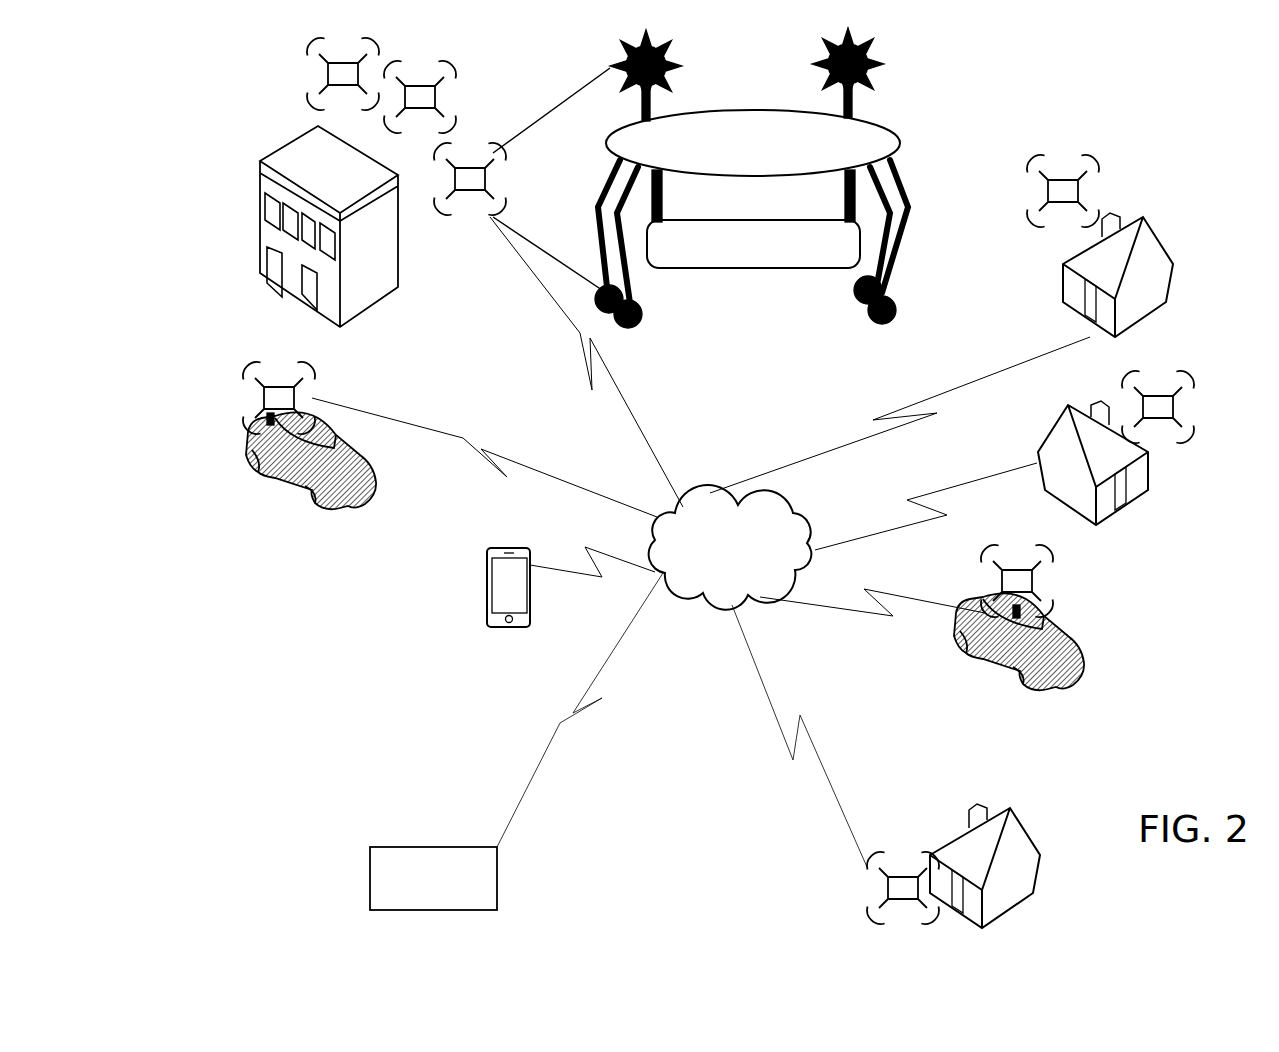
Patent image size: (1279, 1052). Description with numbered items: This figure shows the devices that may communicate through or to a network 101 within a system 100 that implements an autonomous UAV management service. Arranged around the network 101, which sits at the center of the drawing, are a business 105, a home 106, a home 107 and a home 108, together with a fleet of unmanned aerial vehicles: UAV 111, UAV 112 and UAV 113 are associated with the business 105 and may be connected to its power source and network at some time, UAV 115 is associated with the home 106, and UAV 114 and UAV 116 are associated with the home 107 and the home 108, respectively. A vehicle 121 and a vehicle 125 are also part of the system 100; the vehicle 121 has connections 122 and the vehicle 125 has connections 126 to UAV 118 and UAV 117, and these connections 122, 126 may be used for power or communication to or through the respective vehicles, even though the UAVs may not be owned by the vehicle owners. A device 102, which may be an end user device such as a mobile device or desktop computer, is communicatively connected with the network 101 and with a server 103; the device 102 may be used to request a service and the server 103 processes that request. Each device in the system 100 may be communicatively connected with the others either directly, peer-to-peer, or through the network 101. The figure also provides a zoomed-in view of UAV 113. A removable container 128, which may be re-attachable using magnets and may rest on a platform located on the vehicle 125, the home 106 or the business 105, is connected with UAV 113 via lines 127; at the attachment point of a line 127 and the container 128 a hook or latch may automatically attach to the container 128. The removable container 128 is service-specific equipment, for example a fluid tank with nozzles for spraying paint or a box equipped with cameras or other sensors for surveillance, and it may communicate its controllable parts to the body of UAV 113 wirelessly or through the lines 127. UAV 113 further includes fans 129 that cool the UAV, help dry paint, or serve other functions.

The system 100 is at (189, 36).
The network 101 is at (730, 547).
The device 102 is at (483, 595).
The server 103 is at (405, 845).
The business 105 is at (324, 232).
The home 106 is at (1118, 275).
The home 107 is at (1093, 463).
The home 108 is at (985, 866).
The UAV 111 is at (343, 75).
The UAV 112 is at (420, 98).
The UAV 113 is at (671, 205).
The UAV 114 is at (1158, 407).
The UAV 115 is at (1063, 192).
The UAV 116 is at (903, 889).
The UAV 117 is at (1017, 581).
The UAV 118 is at (279, 398).
The vehicle 121 is at (1077, 650).
The connections 122 is at (977, 650).
The vehicle 125 is at (376, 484).
The connections 126 is at (281, 426).
The lines 127 is at (662, 203).
The removable container 128 is at (793, 270).
The fans 129 is at (868, 40).